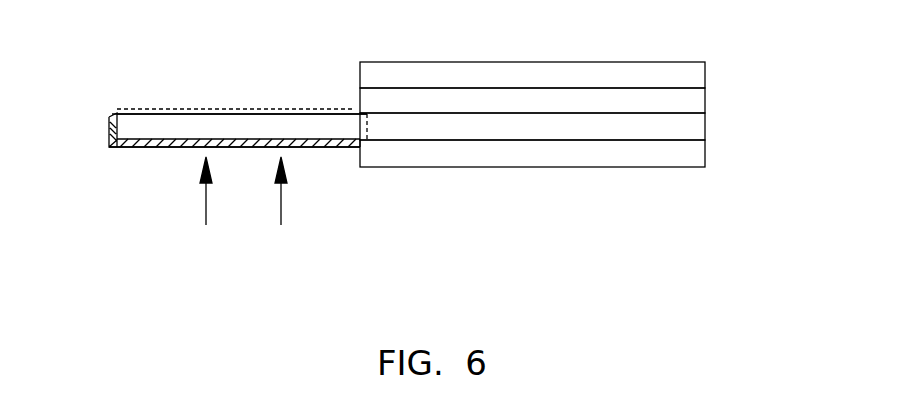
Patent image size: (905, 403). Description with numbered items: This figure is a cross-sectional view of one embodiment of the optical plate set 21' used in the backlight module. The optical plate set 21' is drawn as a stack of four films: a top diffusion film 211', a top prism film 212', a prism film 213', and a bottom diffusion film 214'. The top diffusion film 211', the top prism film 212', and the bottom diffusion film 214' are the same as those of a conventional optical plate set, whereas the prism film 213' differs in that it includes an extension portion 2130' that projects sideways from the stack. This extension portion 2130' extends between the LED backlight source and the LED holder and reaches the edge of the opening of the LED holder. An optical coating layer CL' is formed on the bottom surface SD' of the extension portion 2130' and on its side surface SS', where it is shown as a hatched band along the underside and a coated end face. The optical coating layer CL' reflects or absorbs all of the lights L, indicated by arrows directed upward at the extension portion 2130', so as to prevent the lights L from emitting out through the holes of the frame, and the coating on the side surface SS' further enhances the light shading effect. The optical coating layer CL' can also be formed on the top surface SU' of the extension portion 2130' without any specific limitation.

The optical plate set 21' is at (605, 113).
The top diffusion film 211' is at (580, 74).
The top prism film 212' is at (580, 99).
The prism film 213' is at (580, 126).
The bottom diffusion film 214' is at (580, 153).
The extension portion 2130' is at (228, 68).
The top surface SU' is at (218, 107).
The side surface SS' is at (75, 127).
The bottom surface SD' is at (215, 160).
The optical coating layer CL' is at (222, 187).
The lights L is at (244, 206).